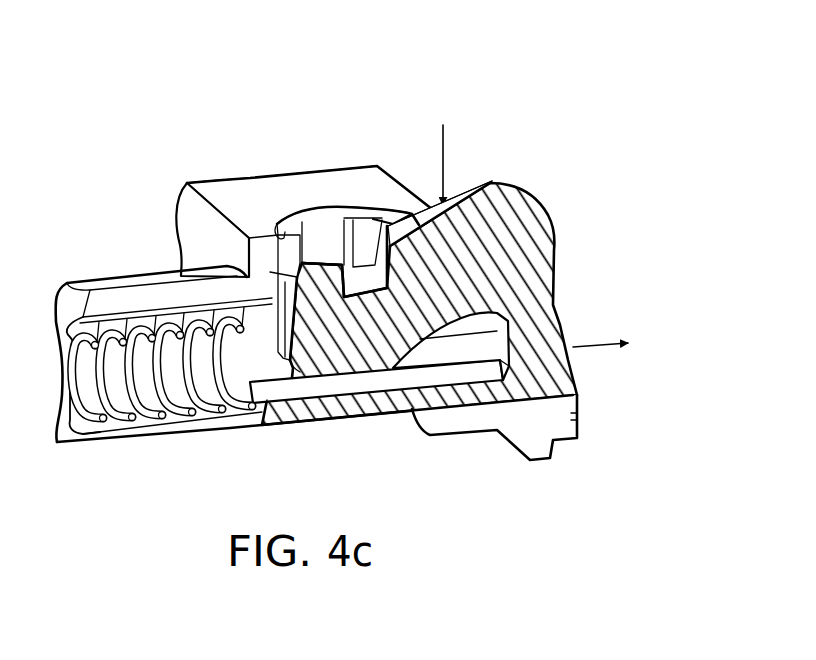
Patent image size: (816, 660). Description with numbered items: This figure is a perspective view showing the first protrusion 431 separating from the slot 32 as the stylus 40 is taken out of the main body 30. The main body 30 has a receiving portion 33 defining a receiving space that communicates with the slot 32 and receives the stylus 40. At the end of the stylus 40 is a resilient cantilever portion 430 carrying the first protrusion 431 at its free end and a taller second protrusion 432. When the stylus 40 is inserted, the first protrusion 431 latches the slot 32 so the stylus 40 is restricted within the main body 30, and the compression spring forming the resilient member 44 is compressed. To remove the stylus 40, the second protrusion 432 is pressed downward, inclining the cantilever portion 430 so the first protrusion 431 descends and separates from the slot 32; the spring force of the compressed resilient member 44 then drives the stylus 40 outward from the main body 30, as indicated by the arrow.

The main body 30 is at (397, 195).
The slot 32 is at (327, 260).
The receiving portion 33 is at (235, 427).
The stylus 40 is at (562, 253).
The resilient member 44 is at (163, 415).
The cantilever portion 430 is at (370, 333).
The first protrusion 431 is at (290, 218).
The second protrusion 432 is at (473, 183).